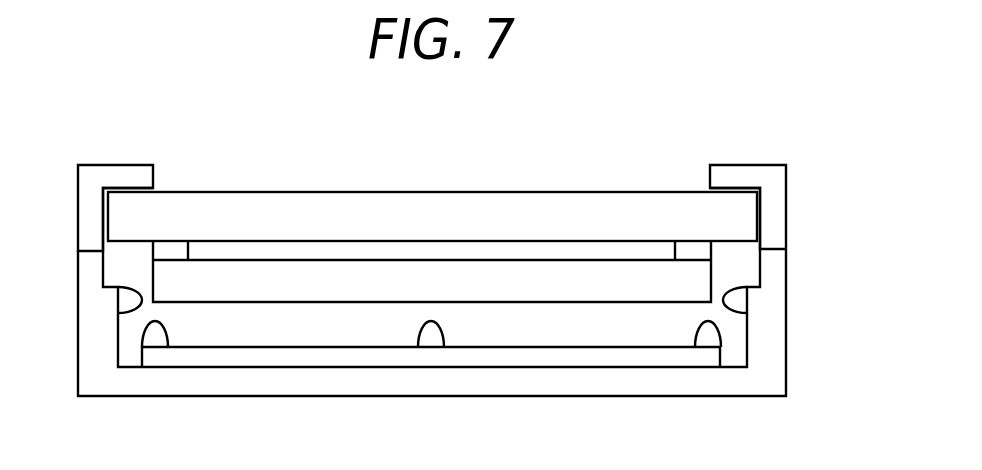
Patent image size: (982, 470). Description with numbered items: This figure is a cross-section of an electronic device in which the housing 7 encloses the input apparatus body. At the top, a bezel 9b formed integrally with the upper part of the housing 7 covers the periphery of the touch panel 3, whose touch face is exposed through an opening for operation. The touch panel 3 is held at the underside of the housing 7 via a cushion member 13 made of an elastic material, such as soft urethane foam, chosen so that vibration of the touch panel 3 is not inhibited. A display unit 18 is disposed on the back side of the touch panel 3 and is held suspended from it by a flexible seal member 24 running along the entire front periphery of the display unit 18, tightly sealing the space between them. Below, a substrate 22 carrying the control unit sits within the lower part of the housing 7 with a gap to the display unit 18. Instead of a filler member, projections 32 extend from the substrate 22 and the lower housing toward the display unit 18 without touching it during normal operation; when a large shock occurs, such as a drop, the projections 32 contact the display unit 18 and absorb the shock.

The housing 7 is at (802, 250).
The bezel 9b is at (747, 165).
The cushion member 13 is at (725, 190).
The touch panel 3 is at (430, 210).
The display unit 18 is at (515, 275).
The seal member 24 is at (690, 250).
The substrate 22 is at (568, 357).
The projections 32 is at (127, 297).